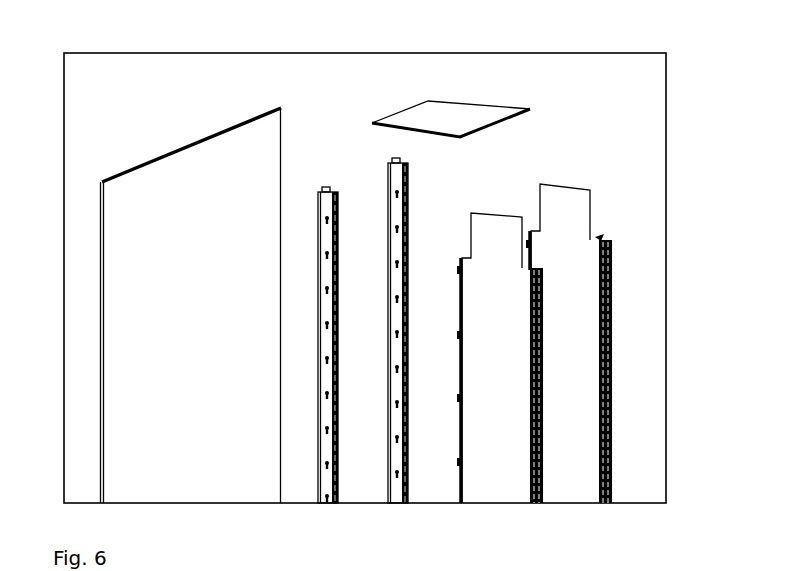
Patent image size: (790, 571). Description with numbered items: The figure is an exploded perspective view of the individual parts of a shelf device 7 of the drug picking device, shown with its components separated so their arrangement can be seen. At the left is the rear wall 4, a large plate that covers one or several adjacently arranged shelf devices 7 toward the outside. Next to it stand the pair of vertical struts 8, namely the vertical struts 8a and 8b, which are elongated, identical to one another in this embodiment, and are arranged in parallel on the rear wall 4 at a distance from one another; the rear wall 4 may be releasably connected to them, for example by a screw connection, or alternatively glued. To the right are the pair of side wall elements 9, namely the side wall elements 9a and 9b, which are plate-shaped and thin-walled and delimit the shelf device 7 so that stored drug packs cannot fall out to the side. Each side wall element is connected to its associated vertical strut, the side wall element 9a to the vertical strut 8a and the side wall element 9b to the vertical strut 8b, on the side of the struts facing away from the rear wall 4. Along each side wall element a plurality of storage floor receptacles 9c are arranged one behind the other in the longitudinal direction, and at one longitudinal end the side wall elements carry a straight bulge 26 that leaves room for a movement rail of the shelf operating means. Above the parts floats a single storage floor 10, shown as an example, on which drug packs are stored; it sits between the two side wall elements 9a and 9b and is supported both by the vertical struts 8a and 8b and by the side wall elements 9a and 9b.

The rear wall 4 is at (140, 185).
The shelf device 7 is at (568, 84).
The pair of vertical struts 8 is at (236, 0).
The vertical strut 8a is at (323, 190).
The vertical strut 8b is at (395, 162).
The pair of side wall elements 9 is at (735, 295).
The side wall element 9a is at (507, 287).
The side wall element 9b is at (572, 345).
The storage floor receptacles 9c is at (617, 413).
The storage floor 10 is at (452, 112).
The bulge 26 is at (602, 232).